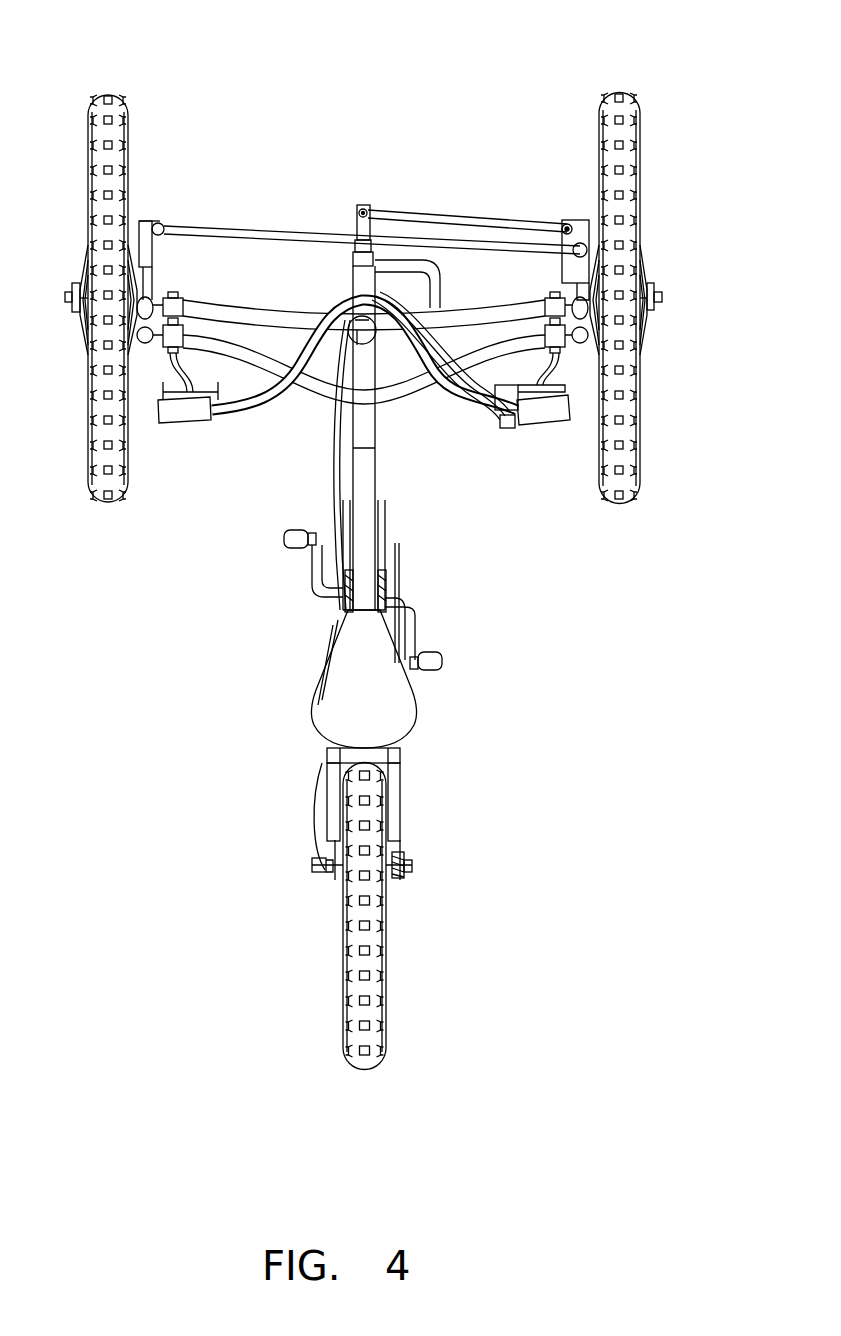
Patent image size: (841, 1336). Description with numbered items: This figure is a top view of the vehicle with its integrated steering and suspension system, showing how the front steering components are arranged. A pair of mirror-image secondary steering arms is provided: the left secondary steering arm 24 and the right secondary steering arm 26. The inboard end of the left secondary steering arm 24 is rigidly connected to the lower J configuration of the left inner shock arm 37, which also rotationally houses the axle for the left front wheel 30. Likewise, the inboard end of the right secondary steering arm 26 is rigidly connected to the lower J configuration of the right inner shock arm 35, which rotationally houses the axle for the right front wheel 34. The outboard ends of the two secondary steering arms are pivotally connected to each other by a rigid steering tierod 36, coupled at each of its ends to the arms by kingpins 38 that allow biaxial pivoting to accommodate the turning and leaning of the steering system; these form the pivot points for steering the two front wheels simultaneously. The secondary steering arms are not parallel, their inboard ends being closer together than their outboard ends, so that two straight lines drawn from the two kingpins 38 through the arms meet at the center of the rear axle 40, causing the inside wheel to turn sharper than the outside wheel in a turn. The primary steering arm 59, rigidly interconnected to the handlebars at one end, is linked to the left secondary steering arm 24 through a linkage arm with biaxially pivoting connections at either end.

The left secondary steering arm 24 is at (578, 222).
The right secondary steering arm 26 is at (143, 220).
The left front wheel 30 is at (640, 425).
The right front wheel 34 is at (90, 424).
The right inner shock arm 35 is at (148, 283).
The steering tierod 36 is at (270, 230).
The left inner shock arm 37 is at (570, 283).
The kingpin 38 is at (160, 222).
The rear axle 40 is at (412, 865).
The primary steering arm 59 is at (357, 213).